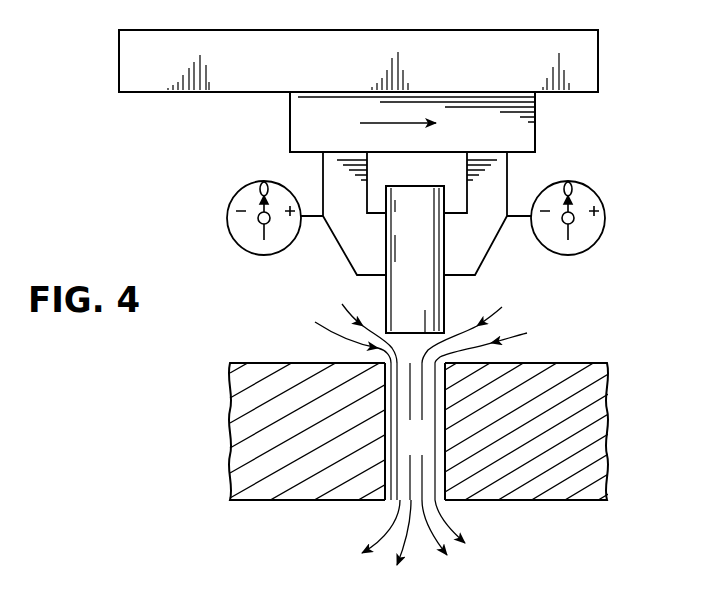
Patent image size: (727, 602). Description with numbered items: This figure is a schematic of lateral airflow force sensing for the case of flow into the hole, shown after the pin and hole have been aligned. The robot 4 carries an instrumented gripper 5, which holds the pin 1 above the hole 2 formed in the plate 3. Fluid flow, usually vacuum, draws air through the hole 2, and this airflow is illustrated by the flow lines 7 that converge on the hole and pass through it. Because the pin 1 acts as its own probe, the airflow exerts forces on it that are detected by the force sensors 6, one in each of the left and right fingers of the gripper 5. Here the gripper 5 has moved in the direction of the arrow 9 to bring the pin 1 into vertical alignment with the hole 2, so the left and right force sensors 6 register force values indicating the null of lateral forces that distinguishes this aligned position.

The pin 1 is at (440, 297).
The hole 2 is at (421, 450).
The plate 3 is at (572, 366).
The robot 4 is at (588, 68).
The gripper 5 is at (482, 245).
The force sensors 6 is at (235, 193).
The flow lines 7 is at (428, 434).
The arrow 9 is at (414, 126).